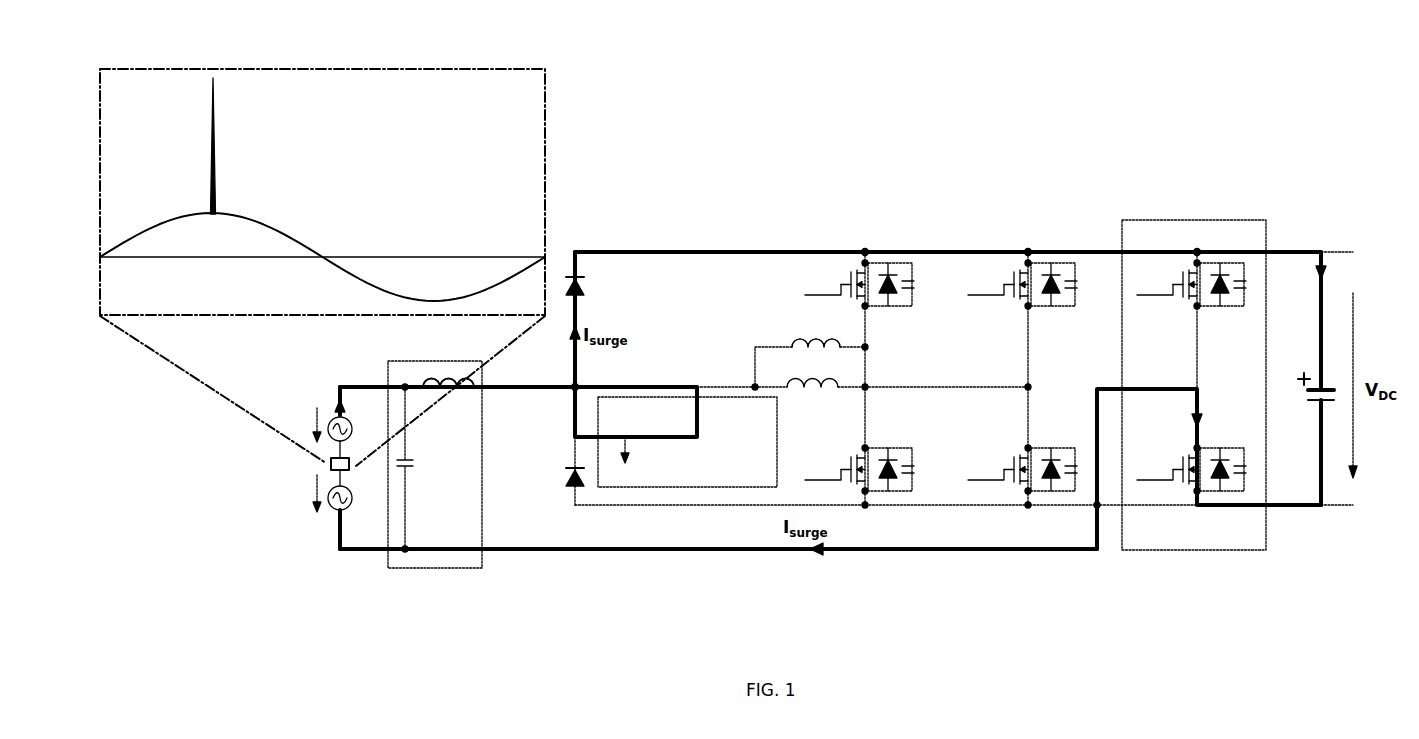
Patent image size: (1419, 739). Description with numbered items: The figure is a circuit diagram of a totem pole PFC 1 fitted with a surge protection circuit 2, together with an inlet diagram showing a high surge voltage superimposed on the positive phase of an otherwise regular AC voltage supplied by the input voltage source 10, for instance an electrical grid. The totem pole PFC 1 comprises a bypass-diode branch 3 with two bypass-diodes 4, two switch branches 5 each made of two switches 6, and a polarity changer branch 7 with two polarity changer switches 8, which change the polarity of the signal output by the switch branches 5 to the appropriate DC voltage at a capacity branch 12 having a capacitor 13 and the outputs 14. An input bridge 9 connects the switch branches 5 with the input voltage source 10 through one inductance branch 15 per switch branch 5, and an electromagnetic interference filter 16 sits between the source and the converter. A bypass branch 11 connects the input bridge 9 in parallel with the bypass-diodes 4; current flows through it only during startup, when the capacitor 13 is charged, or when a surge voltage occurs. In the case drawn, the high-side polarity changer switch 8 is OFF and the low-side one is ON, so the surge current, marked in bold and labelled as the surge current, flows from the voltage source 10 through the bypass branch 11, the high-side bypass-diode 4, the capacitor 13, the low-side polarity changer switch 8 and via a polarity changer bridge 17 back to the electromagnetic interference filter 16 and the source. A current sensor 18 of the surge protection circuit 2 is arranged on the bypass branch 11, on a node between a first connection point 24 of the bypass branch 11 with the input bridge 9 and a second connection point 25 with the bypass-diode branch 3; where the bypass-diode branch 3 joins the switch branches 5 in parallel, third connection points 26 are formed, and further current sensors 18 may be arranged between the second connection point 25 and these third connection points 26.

The totem pole PFC 1 is at (981, 138).
The surge protection circuit 2 is at (645, 488).
The bypass-diode branch 3 is at (566, 270).
The bypass-diode 4 is at (585, 288).
The switch branch 5 is at (867, 328).
The switch 6 is at (859, 266).
The polarity changer branch 7 is at (1272, 306).
The polarity changer switch 8 is at (1191, 266).
The input bridge 9 is at (743, 384).
The input voltage source 10 is at (300, 512).
The bypass branch 11 is at (698, 420).
The capacity branch 12 is at (1323, 332).
The capacitor 13 is at (1323, 401).
The output 14 is at (1353, 252).
The inductance branch 15 is at (792, 342).
The electromagnetic interference filter 16 is at (435, 570).
The polarity changer bridge 17 is at (1070, 551).
The current sensor 18 is at (617, 445).
The first connection point 24 is at (690, 385).
The second connection point 25 is at (576, 438).
The third connection point 26 is at (866, 251).